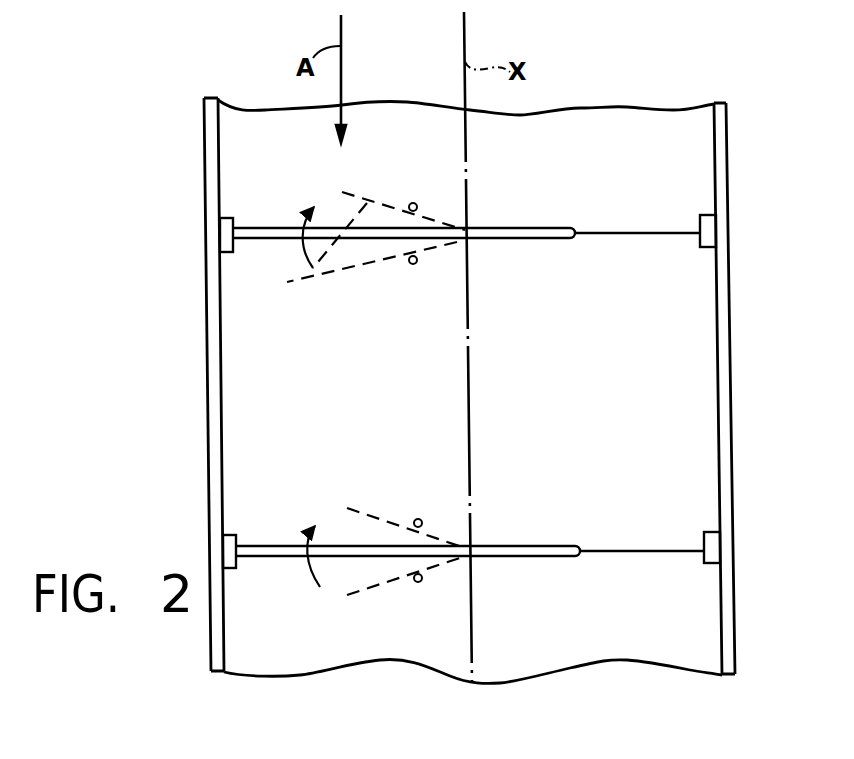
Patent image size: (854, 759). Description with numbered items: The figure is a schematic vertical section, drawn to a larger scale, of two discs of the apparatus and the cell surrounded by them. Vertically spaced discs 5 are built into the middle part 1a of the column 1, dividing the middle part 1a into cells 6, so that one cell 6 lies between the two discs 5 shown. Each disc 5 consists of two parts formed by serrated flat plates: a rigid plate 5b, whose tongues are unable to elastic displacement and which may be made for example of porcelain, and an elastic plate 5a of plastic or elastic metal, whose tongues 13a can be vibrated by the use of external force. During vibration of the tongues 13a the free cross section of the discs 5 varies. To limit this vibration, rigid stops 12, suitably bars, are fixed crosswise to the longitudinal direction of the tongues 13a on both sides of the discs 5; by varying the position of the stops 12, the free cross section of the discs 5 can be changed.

The column 1 is at (183, 379).
The middle part 1a is at (205, 317).
The disc 5 is at (600, 238).
The elastic plate 5a is at (285, 229).
The rigid plate 5b is at (667, 232).
The cell 6 is at (672, 150).
The rigid stop 12 is at (411, 256).
The tongue of elastic plate 13a is at (390, 258).